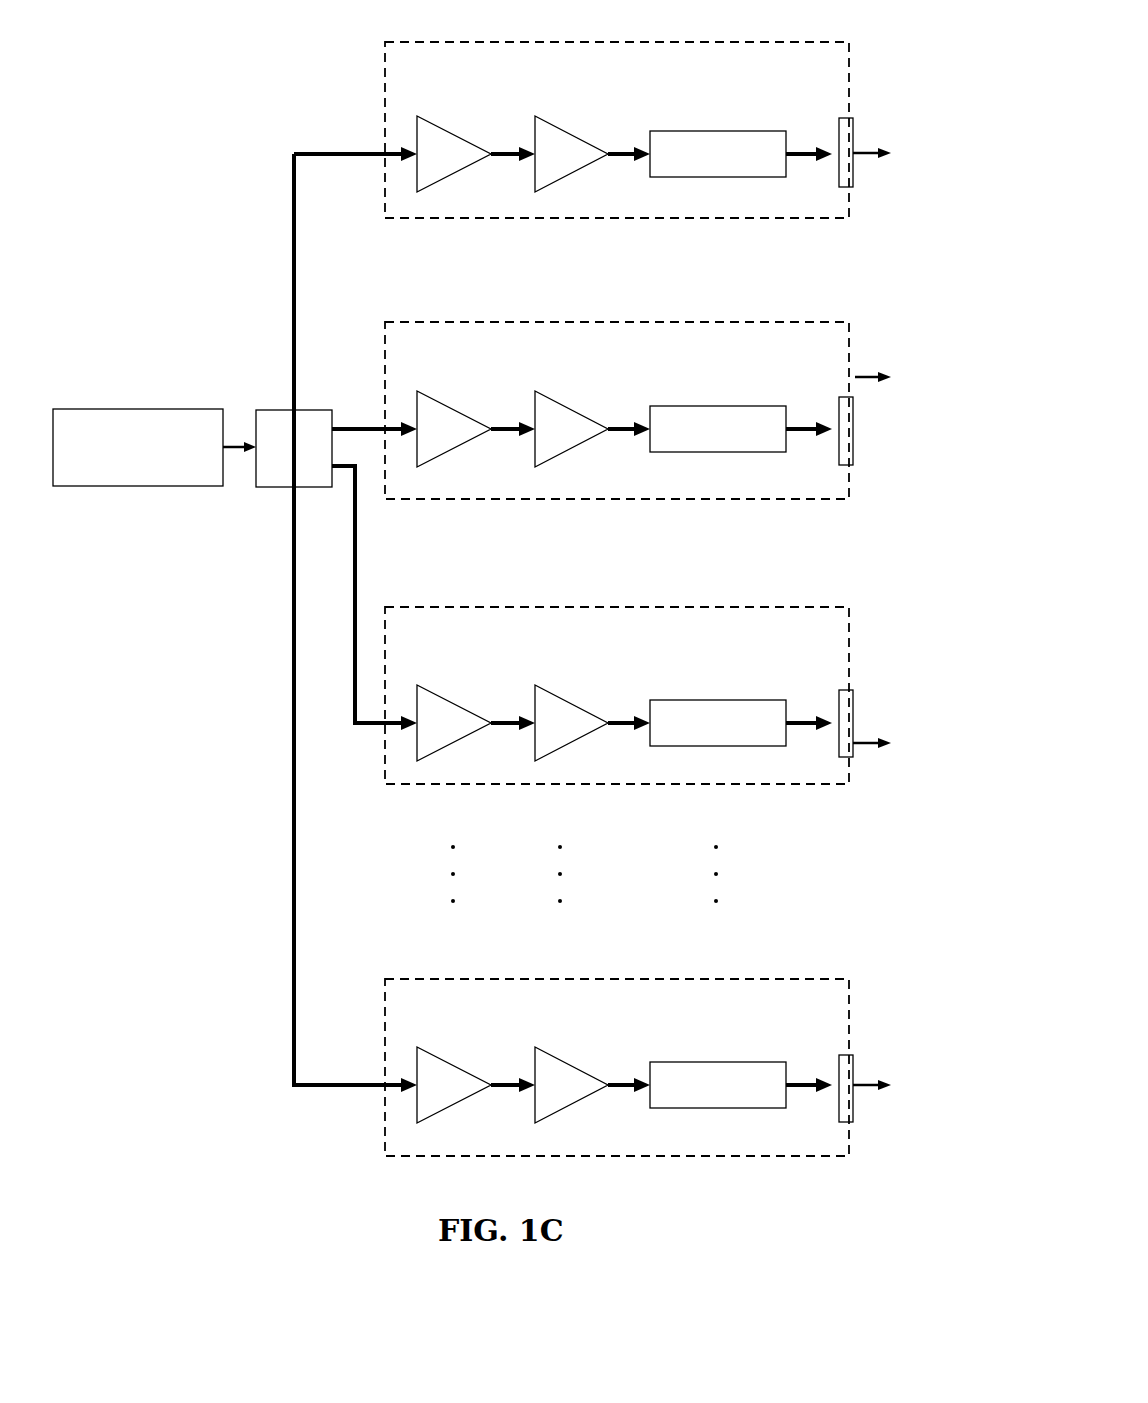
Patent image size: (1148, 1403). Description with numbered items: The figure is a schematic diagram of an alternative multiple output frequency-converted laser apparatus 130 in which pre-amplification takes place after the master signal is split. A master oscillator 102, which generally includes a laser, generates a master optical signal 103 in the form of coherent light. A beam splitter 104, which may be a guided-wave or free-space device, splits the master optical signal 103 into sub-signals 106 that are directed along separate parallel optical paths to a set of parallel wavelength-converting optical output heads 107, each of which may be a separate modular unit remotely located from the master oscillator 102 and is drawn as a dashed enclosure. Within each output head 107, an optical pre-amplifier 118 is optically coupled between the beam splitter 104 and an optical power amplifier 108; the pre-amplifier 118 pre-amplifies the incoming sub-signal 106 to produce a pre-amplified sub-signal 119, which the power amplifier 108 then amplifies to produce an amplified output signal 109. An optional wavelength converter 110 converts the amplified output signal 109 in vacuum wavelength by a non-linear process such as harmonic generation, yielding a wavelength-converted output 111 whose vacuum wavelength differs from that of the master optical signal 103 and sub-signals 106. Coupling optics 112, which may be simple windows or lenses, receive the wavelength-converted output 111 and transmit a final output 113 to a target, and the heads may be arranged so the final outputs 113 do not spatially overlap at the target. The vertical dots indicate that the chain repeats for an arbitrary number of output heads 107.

The laser apparatus 130 is at (170, 88).
The master oscillator 102 is at (138, 409).
The master optical signal 103 is at (234, 452).
The beam splitter 104 is at (262, 410).
The sub-signals 106 is at (335, 152).
The wavelength-converting optical output heads 107 is at (640, 42).
The optical pre-amplifiers 118 is at (460, 135).
The pre-amplified sub-signals 119 is at (500, 150).
The optical power amplifiers 108 is at (578, 137).
The amplified output signals 109 is at (636, 148).
The wavelength converters 110 is at (718, 131).
The wavelength-converted outputs 111 is at (805, 150).
The coupling optics 112 is at (838, 120).
The final outputs 113 is at (868, 151).